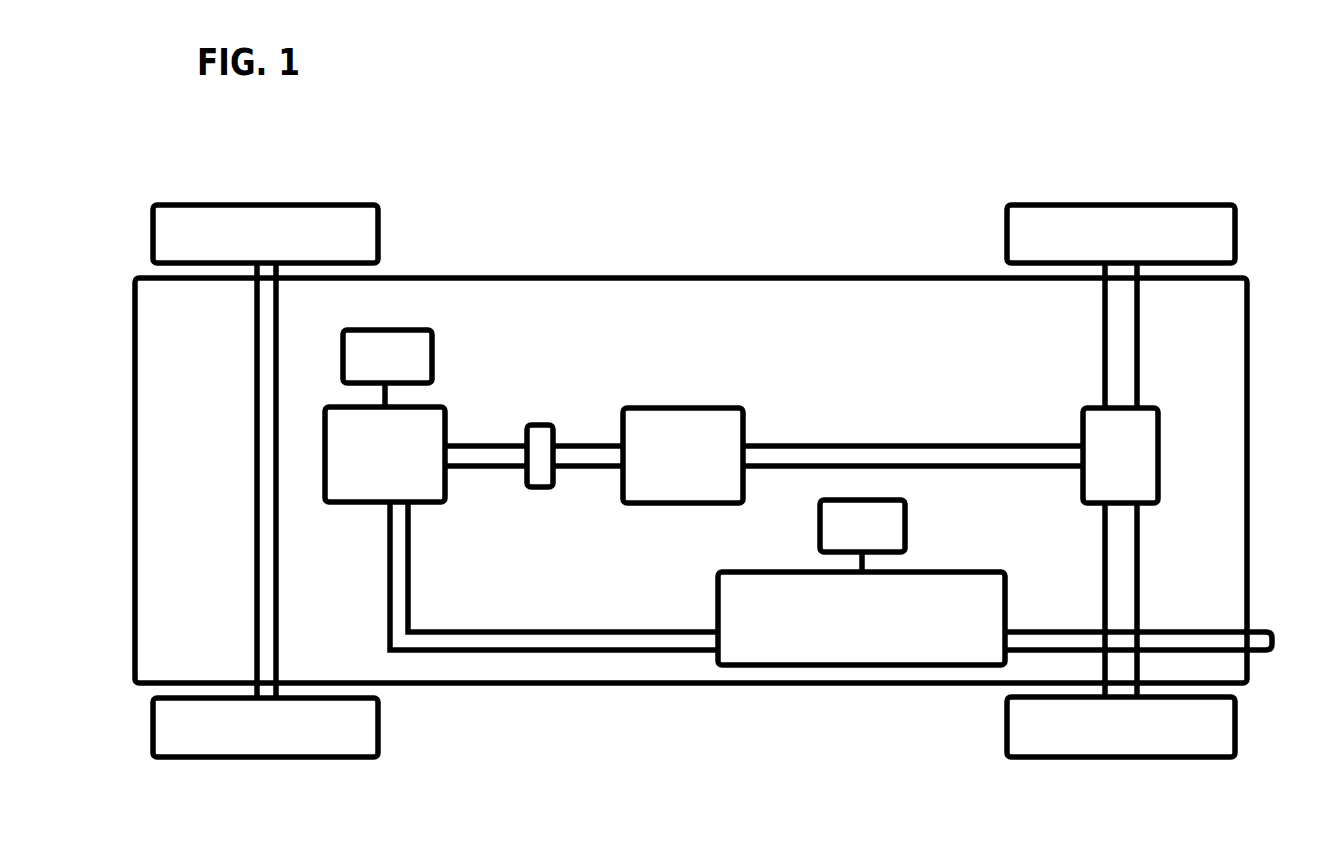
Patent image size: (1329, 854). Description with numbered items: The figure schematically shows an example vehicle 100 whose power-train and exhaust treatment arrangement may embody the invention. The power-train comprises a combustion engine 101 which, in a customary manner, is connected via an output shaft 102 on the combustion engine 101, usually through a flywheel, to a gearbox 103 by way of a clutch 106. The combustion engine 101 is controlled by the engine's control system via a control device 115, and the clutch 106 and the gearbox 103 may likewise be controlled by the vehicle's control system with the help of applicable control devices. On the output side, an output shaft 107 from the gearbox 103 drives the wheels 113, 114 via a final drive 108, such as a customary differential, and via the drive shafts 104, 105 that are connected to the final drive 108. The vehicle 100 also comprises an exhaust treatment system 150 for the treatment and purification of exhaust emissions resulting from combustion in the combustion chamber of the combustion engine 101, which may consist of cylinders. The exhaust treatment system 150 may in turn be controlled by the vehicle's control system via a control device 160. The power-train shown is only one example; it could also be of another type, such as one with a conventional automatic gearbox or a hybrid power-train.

The vehicle 100 is at (592, 118).
The combustion engine 101 is at (358, 490).
The output shaft 102 is at (465, 440).
The gearbox 103 is at (686, 418).
The drive shaft 104 is at (1130, 336).
The drive shaft 105 is at (1130, 608).
The clutch 106 is at (540, 474).
The output shaft 107 is at (1005, 461).
The final drive 108 is at (1158, 452).
The wheel 113 is at (1228, 228).
The wheel 114 is at (1228, 728).
The control device 115 is at (388, 365).
The exhaust treatment system 150 is at (880, 657).
The control device 160 is at (863, 535).